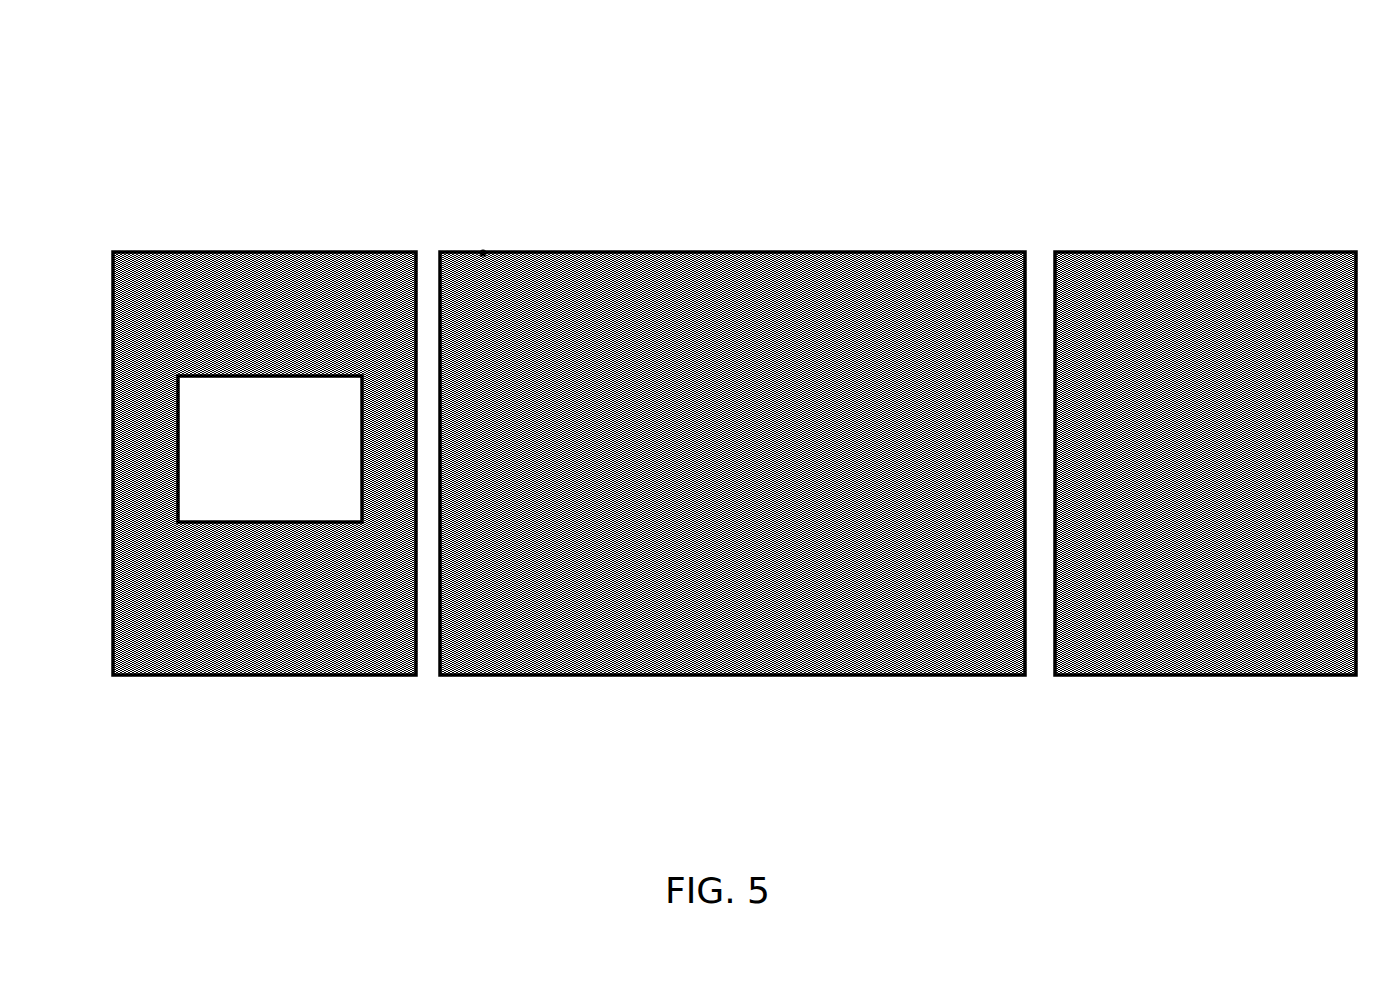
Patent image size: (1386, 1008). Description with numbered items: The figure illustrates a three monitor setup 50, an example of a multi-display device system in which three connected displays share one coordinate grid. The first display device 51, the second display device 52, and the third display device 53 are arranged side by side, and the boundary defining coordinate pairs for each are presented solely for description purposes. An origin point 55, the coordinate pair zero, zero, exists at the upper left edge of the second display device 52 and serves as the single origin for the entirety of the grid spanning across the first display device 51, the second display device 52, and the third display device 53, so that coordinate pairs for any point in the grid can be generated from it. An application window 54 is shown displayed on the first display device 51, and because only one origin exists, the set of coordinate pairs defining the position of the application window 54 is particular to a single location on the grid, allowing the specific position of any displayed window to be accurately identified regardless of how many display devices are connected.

The three monitor setup 50 is at (178, 80).
The first display device 51 is at (264, 501).
The second display device 52 is at (713, 677).
The third display device 53 is at (1218, 677).
The application window 54 is at (270, 449).
The origin point 55 is at (483, 253).